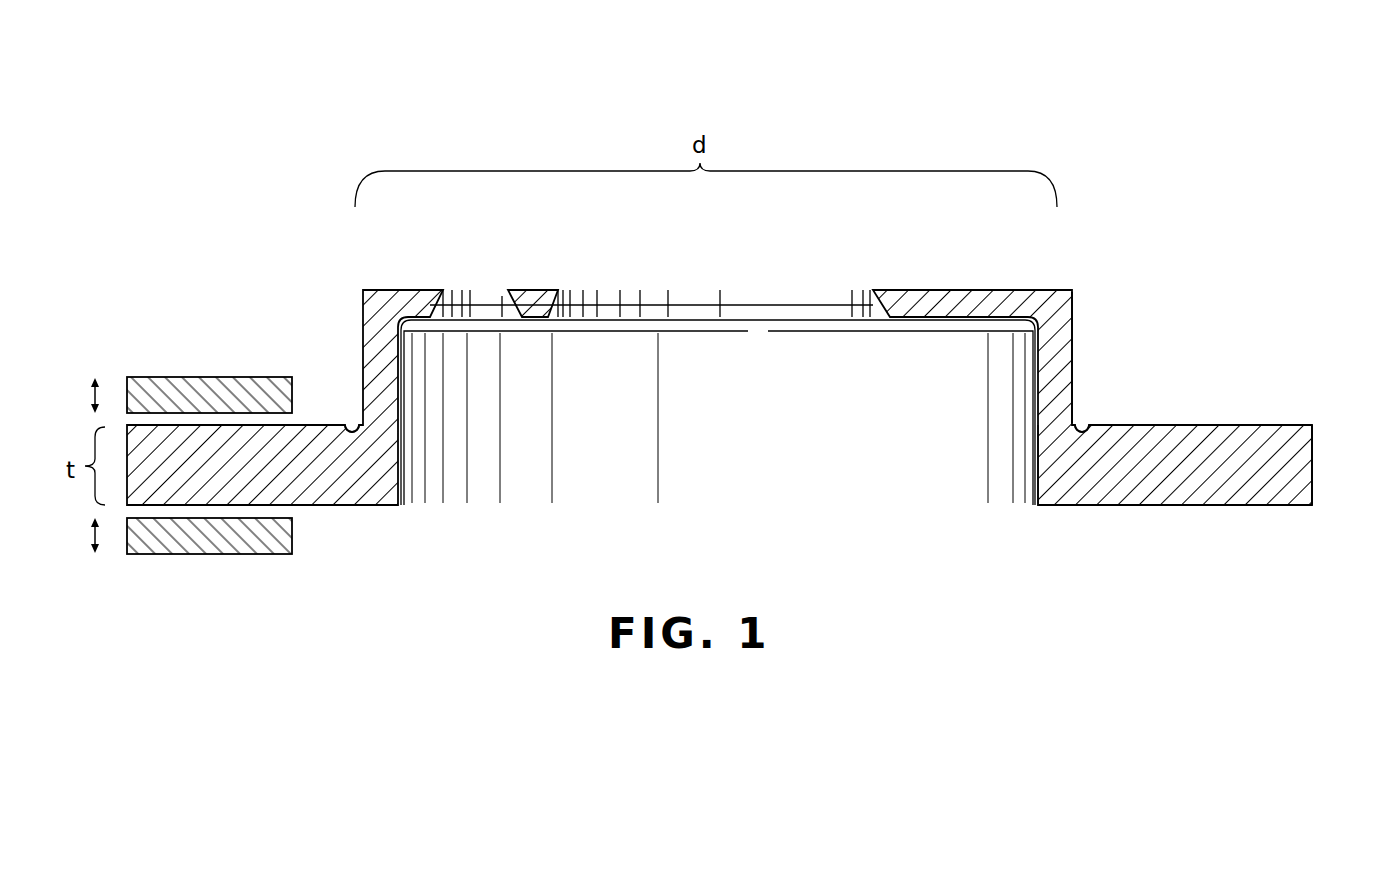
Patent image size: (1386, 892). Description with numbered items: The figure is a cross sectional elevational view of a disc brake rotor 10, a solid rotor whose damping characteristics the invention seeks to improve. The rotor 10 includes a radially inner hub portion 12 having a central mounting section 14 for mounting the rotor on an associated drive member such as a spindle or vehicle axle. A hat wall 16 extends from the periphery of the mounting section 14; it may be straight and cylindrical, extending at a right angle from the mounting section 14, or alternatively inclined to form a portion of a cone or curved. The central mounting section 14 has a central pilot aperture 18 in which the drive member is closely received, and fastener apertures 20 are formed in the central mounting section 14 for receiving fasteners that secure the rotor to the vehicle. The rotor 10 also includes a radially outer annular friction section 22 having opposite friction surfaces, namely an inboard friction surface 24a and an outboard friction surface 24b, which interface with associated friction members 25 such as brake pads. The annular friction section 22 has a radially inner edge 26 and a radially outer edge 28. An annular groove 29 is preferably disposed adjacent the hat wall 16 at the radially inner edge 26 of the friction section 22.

The disc brake rotor 10 is at (1001, 117).
The radially inner hub portion 12 is at (366, 261).
The central mounting section 14 is at (995, 290).
The hat wall 16 is at (1075, 333).
The central pilot aperture 18 is at (572, 290).
The fastener apertures 20 is at (508, 298).
The radially outer annular friction section 22 is at (1221, 296).
The inboard friction surface 24a is at (1208, 506).
The outboard friction surface 24b is at (1192, 425).
The friction members 25 is at (207, 377).
The radially inner edge 26 is at (1090, 423).
The radially outer edge 28 is at (1313, 423).
The annular groove 29 is at (352, 425).